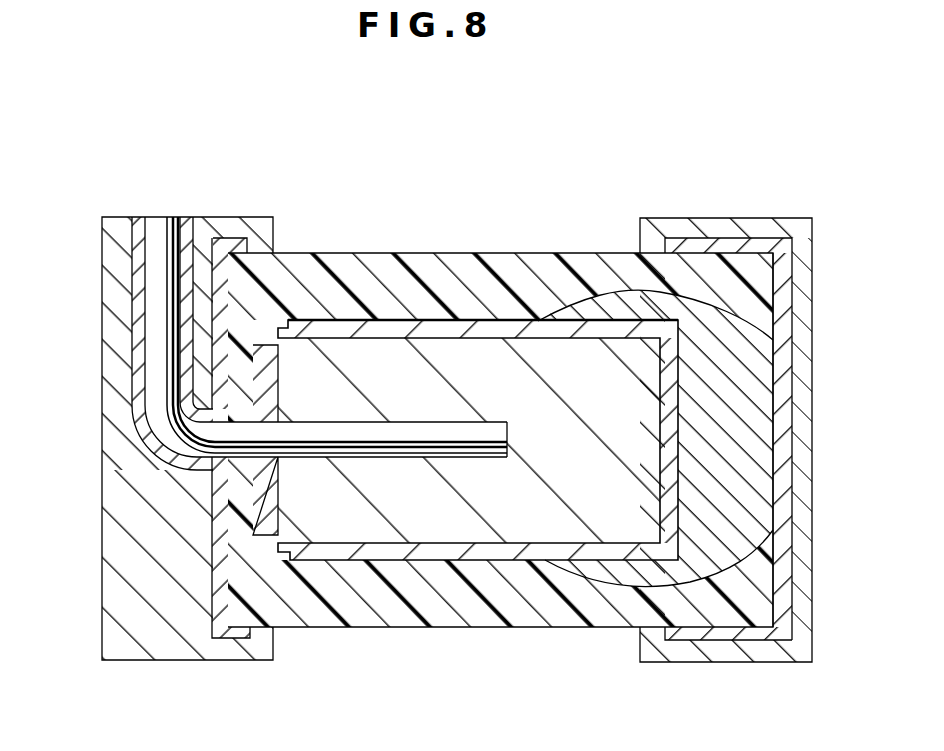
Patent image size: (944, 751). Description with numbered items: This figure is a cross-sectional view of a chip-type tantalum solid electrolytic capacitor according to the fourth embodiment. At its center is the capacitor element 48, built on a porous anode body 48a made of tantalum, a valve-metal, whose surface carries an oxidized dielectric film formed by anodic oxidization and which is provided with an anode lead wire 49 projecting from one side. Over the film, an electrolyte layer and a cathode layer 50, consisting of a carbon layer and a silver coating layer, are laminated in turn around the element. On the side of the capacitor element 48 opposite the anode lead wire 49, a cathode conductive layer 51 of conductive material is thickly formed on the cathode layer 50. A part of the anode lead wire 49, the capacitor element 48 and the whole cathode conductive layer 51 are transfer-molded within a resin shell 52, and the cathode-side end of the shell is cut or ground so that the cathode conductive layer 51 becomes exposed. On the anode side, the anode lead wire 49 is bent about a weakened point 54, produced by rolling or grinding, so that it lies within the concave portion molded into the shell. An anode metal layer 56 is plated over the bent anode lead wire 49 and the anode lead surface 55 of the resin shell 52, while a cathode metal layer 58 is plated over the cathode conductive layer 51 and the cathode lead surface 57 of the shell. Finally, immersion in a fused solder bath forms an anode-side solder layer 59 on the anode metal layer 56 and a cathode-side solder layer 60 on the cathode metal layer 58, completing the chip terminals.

The capacitor element 48 is at (466, 355).
The porous anode body 48a is at (538, 355).
The anode lead wire 49 is at (166, 232).
The cathode layer 50 is at (334, 328).
The cathode conductive layer 51 is at (758, 366).
The resin shell 52 is at (485, 608).
The weakened point 54 is at (165, 447).
The anode lead surface 55 is at (222, 610).
The anode metal layer 56 is at (212, 562).
The cathode lead surface 57 is at (778, 421).
The cathode metal layer 58 is at (700, 630).
The anode-side solder layer 59 is at (115, 268).
The cathode-side solder layer 60 is at (800, 576).